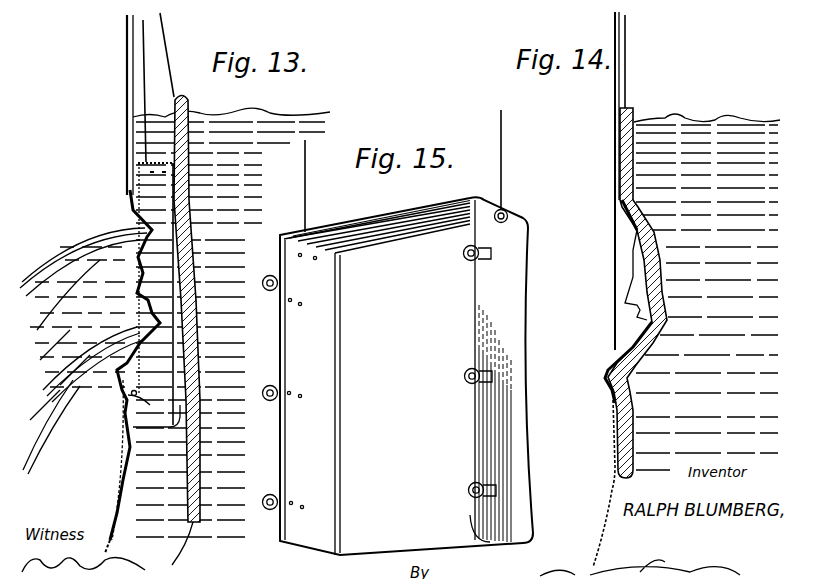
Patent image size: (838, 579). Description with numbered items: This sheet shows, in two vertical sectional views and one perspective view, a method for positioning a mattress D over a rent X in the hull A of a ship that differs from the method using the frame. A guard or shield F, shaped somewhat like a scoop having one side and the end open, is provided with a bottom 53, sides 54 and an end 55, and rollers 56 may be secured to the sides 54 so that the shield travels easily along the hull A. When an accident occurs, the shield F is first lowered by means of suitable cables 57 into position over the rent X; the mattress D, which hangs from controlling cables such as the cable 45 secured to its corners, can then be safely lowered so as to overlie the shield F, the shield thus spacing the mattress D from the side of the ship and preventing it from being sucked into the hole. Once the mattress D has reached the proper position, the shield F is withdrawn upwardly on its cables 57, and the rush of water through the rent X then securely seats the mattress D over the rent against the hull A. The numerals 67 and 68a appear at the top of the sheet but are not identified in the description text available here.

In FIG. 13, the guide member 67 is at (42, 2).
In FIG. 14, the guide member 67 is at (748, 6).
In FIG. 13, the arm 68a is at (212, 7).
In FIG. 15, the arm 68a is at (395, 10).
In FIG. 14, the arm 68a is at (581, 7).
In FIG. 13, the controlling cable 45 is at (173, 50).
In FIG. 13, the cables 57 is at (147, 90).
In FIG. 15, the cables 57 is at (306, 211).
In FIG. 13, the bottom 53 is at (184, 248).
In FIG. 15, the bottom 53 is at (406, 376).
In FIG. 15, the sides 54 is at (281, 438).
In FIG. 15, the end 55 is at (423, 227).
In FIG. 15, the rollers 56 is at (466, 260).
In FIG. 13, the hull A is at (127, 63).
In FIG. 14, the hull A is at (617, 113).
In FIG. 13, the mattress D is at (189, 127).
In FIG. 14, the mattress D is at (620, 180).
In FIG. 13, the rent X is at (146, 236).
In FIG. 14, the rent X is at (632, 265).
In FIG. 13, the guard or shield F is at (150, 406).
In FIG. 15, the guard or shield F is at (400, 373).